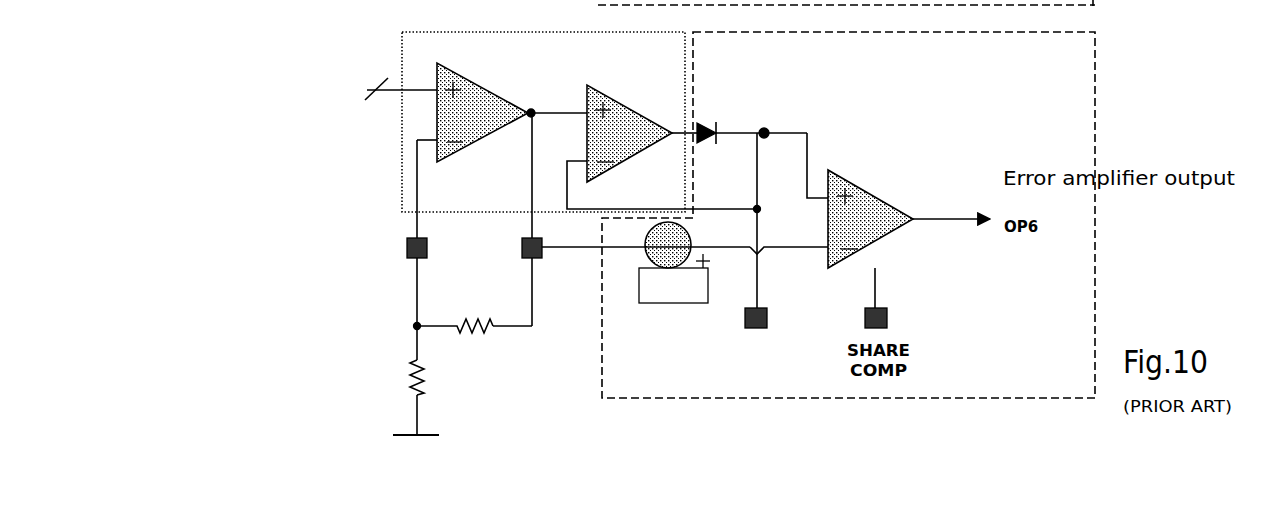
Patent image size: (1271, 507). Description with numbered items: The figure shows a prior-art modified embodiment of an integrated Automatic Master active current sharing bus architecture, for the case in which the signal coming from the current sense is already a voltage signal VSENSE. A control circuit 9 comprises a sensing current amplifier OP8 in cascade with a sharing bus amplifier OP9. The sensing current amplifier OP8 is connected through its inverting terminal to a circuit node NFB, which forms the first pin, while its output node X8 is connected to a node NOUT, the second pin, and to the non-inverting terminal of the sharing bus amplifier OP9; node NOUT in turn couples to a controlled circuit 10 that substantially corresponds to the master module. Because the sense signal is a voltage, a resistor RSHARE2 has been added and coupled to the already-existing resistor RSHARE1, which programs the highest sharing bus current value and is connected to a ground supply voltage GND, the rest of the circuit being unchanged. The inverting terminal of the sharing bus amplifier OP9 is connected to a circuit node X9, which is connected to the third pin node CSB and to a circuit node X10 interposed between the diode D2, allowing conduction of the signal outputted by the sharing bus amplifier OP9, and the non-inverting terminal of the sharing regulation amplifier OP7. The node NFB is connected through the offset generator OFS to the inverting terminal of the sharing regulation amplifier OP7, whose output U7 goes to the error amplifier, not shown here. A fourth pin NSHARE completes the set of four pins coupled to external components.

The control circuit 9 is at (398, 35).
The controlled circuit 10 is at (1101, 117).
The sensing current amplifier OP8 is at (482, 98).
The sharing bus amplifier OP9 is at (629, 117).
The sharing regulation amplifier OP7 is at (870, 205).
The diode D2 is at (701, 118).
The output node of the sensing current amplifier X8 is at (556, 98).
The circuit node X9 is at (679, 187).
The circuit node X10 is at (761, 123).
The output of the sharing regulation amplifier U7 is at (951, 209).
The offset generator OFS is at (674, 262).
The current sharing bus node CSB is at (766, 323).
The share node NSHARE is at (902, 298).
The feedback circuit node NFB is at (406, 240).
The output node NOUT is at (524, 240).
The resistor RSHARE1 is at (378, 377).
The resistor RSHARE2 is at (473, 339).
The ground supply voltage GND is at (420, 429).
The sense voltage VSENSE is at (366, 89).